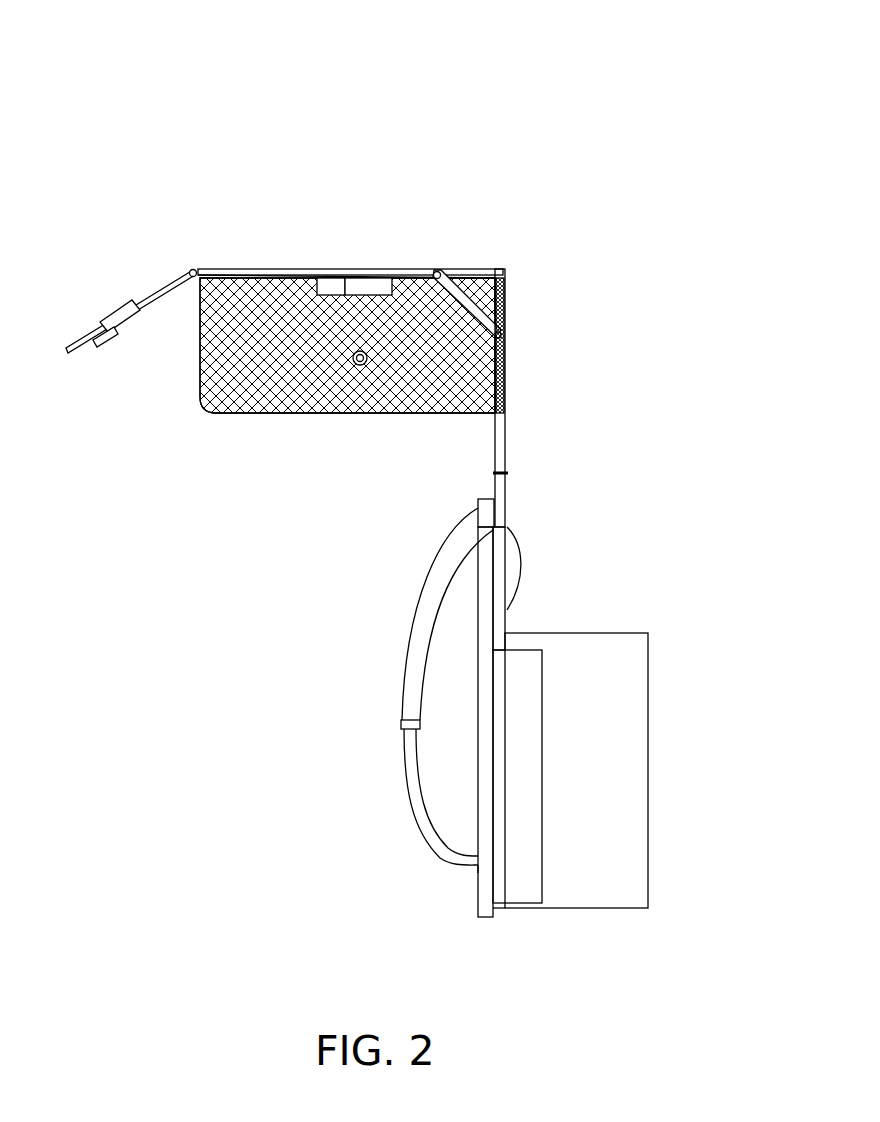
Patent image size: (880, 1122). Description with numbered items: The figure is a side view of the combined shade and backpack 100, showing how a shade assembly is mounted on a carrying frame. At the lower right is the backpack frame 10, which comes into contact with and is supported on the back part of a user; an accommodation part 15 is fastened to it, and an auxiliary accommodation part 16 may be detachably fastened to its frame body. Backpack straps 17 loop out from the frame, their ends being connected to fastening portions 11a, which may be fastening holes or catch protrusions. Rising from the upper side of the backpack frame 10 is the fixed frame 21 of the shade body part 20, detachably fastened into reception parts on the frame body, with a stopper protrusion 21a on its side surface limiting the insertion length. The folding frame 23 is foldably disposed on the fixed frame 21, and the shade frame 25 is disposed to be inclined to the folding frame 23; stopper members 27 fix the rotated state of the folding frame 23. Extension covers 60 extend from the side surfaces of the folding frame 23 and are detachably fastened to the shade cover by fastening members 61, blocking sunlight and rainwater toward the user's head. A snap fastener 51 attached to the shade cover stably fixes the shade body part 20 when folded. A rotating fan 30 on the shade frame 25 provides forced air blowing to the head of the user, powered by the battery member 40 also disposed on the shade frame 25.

The combined shade and backpack 100 is at (479, 143).
The extension cover 60 is at (297, 282).
The battery member 40 is at (400, 280).
The snap fastener 51 is at (328, 280).
The stopper member 27 is at (478, 276).
The fastening member 61 is at (506, 297).
The fixed frame 21 is at (498, 420).
The stopper protrusion 21a is at (508, 473).
The rotating fan 30 is at (111, 314).
The shade frame 25 is at (105, 345).
The folding frame 23 is at (203, 352).
The shade body part 20 is at (205, 522).
The backpack frame 10 is at (503, 788).
The accommodation part 15 is at (648, 868).
The auxiliary accommodation part 16 is at (527, 895).
The backpack strap 17 is at (402, 690).
The fastening portion 11a is at (478, 872).